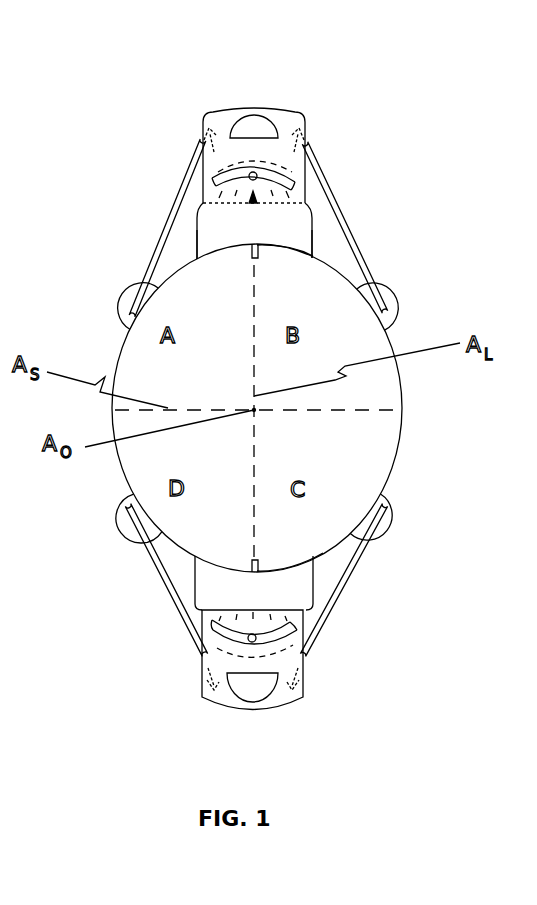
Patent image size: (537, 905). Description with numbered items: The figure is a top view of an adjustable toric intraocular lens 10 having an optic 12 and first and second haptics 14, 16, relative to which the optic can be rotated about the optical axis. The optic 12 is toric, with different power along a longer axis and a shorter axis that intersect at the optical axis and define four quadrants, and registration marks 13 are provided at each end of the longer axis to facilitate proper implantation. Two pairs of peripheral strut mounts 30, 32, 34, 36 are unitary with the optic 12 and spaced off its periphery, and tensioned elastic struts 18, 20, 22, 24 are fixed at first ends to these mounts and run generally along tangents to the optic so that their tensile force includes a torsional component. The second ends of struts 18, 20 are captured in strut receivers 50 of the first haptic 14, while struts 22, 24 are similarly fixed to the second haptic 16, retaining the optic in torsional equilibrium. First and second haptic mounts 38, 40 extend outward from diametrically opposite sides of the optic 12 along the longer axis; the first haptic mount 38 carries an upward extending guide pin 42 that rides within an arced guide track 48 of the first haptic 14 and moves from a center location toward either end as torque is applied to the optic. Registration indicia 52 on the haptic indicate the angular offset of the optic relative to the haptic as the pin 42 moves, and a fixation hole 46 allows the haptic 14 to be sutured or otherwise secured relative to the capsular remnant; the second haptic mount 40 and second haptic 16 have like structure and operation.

The intraocular lens 10 is at (410, 108).
The optic 12 is at (398, 380).
The registration marks 13 is at (287, 248).
The first haptic 14 is at (289, 116).
The second haptic 16 is at (282, 705).
The tensioned strut 18 is at (190, 172).
The tensioned strut 20 is at (340, 213).
The tensioned strut 22 is at (343, 600).
The tensioned strut 24 is at (165, 585).
The strut mount 30 is at (118, 296).
The strut mount 32 is at (395, 300).
The strut mount 34 is at (395, 515).
The strut mount 36 is at (112, 521).
The first haptic mount 38 is at (197, 248).
The second haptic mount 40 is at (210, 583).
The guide pin 42 is at (249, 178).
The fixation hole 46 is at (252, 118).
The guide track 48 is at (277, 178).
The strut receivers 50 is at (208, 128).
The registration indicia 52 is at (246, 203).